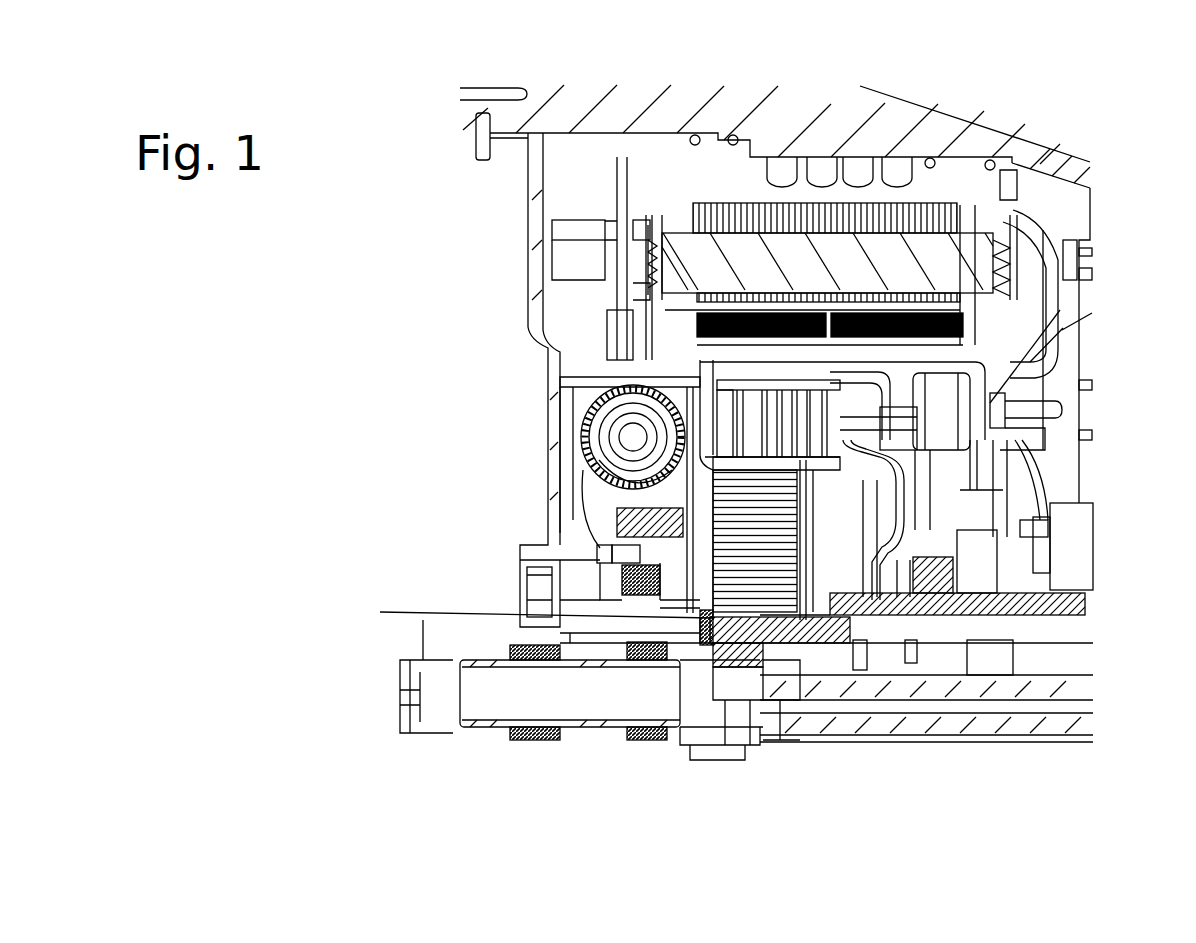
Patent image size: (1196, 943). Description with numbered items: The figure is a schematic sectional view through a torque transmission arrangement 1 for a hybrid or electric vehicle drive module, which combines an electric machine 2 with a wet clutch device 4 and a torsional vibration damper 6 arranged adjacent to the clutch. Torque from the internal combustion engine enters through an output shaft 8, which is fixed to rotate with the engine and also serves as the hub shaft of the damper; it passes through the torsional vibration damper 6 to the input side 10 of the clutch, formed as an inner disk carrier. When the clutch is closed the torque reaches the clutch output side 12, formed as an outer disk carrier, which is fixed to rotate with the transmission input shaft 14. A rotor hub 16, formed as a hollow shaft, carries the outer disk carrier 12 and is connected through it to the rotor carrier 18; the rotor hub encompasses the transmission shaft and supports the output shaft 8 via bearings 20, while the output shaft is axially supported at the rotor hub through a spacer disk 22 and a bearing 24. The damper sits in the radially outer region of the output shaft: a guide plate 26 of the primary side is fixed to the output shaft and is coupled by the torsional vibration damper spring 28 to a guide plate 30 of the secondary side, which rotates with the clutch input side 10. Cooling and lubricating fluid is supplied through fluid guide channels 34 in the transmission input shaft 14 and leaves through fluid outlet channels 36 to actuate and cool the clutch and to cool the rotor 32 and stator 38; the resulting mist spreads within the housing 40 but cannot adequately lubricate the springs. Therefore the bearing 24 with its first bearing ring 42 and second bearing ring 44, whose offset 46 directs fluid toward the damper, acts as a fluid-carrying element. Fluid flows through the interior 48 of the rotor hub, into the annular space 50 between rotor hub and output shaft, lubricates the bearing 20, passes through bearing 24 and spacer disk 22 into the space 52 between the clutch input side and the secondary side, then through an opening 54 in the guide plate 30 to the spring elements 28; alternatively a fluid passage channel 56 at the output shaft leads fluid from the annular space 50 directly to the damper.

The torque transmission arrangement 1 is at (767, 45).
The electric machine 2 is at (1050, 215).
The wet clutch device 4 is at (845, 413).
The torsional vibration damper 6 is at (573, 438).
The output shaft 8 is at (530, 627).
The input side of the clutch device 10 is at (657, 633).
The clutch output side 12 is at (940, 637).
The transmission input shaft 14 is at (1057, 620).
The rotor hub 16 is at (795, 640).
The rotor carrier 18 is at (1007, 640).
The bearings 20 is at (517, 660).
The spacer disk 22 is at (700, 620).
The bearing 24 is at (713, 680).
The guide plate of the primary side 26 is at (613, 537).
The torsional vibration damper spring 28 is at (585, 405).
The guide plate of the secondary side 30 is at (690, 390).
The rotor 32 is at (930, 345).
The fluid guide channels 34 is at (843, 677).
The fluid outlet channels 36 is at (756, 640).
The stator 38 is at (875, 272).
The housing 40 is at (613, 120).
The first bearing ring 42 is at (707, 640).
The second bearing ring 44 is at (745, 635).
The offset 46 is at (770, 640).
The interior of the rotor hub 48 is at (480, 700).
The annular space 50 is at (460, 660).
The space 52 is at (610, 552).
The opening 54 is at (593, 660).
The fluid passage channel 56 is at (677, 597).